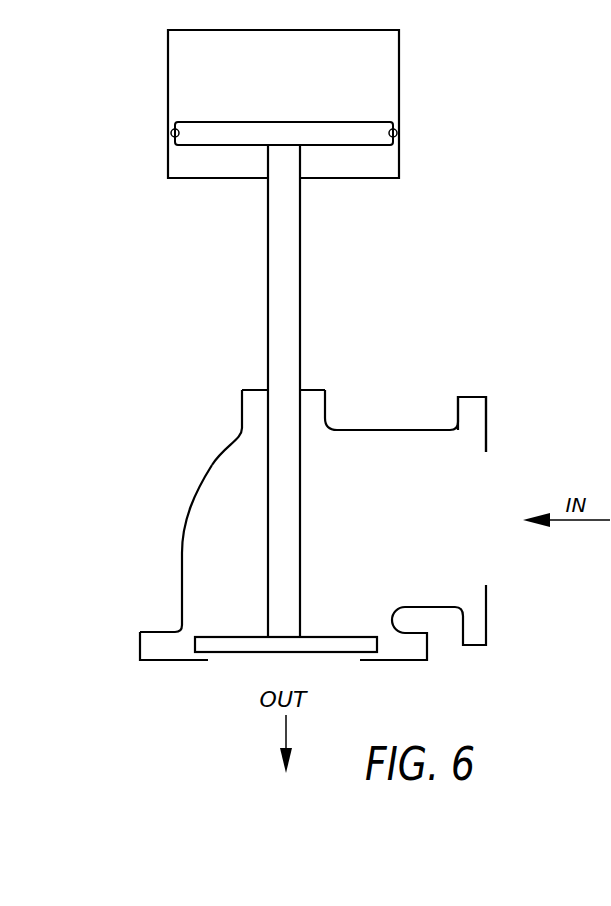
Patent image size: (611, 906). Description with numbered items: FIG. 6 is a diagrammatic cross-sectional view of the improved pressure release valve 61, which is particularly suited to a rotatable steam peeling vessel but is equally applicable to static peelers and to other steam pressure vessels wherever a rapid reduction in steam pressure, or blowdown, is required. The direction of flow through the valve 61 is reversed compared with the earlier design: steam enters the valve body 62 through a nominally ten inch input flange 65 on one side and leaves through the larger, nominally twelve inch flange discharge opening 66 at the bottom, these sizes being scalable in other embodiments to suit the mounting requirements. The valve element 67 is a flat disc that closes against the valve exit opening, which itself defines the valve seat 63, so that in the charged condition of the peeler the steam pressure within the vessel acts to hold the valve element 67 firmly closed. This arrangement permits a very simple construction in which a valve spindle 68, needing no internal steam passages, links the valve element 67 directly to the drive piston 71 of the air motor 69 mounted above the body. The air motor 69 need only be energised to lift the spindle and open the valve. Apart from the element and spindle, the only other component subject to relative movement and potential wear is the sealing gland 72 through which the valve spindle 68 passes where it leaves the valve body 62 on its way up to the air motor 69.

The pressure release valve 61 is at (203, 431).
The valve body 62 is at (192, 497).
The valve seat 63 is at (208, 661).
The input flange 65 is at (487, 449).
The flange discharge opening 66 is at (367, 661).
The valve element 67 is at (323, 645).
The valve spindle 68 is at (290, 512).
The air motor 69 is at (399, 84).
The drive piston 71 is at (337, 134).
The sealing gland 72 is at (300, 388).